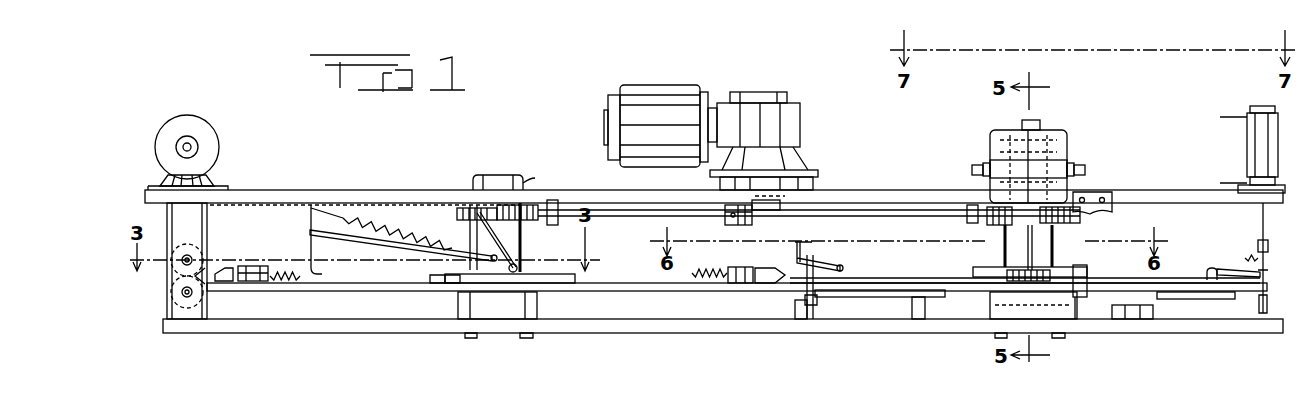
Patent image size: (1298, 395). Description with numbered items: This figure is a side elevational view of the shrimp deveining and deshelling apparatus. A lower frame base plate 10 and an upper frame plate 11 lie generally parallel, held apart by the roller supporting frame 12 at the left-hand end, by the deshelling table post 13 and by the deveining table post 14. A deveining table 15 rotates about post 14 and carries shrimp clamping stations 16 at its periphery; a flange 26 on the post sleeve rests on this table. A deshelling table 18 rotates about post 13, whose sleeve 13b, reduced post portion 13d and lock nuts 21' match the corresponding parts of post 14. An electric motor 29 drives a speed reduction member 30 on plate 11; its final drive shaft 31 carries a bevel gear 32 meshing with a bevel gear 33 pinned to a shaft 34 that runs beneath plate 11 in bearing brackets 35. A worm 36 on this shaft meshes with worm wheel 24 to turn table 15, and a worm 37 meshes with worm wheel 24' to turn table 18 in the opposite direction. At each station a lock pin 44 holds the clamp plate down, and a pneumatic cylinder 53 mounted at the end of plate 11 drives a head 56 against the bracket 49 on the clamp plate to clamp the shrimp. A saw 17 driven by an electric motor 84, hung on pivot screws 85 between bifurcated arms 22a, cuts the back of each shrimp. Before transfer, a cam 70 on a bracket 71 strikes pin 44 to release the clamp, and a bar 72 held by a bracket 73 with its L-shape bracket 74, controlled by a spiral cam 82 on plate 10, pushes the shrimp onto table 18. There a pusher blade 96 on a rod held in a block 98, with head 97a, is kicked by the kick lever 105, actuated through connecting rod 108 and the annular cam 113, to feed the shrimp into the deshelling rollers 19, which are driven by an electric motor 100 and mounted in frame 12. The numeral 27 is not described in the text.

The lower frame base plate 10 is at (750, 332).
The upper frame plate 11 is at (282, 198).
The roller supporting frame 12 is at (207, 230).
The deshelling table post 13 is at (463, 246).
The sleeve 13b is at (524, 246).
The post portion of reduced diameter 13d is at (496, 175).
The deveining table post 14 is at (1066, 240).
The deveining table 15 is at (920, 272).
The shrimp clamping stations 16 is at (828, 266).
The rotatable saw 17 is at (1008, 272).
The deshelling table 18 is at (630, 292).
The deshelling rollers 19 is at (183, 247).
The lock nuts 21' is at (536, 172).
The bifurcated arms 22a is at (985, 164).
The worm wheel 24 is at (1102, 210).
The worm wheel 24' is at (461, 221).
The flange 26 is at (1088, 260).
The support 27 is at (1078, 300).
The electric motor 29 is at (658, 95).
The speed reduction member 30 is at (790, 116).
The final drive shaft 31 is at (797, 167).
The bevel gear 32 is at (775, 211).
The bevel gear 33 is at (745, 226).
The shaft 34 is at (632, 218).
The bearing brackets 35 is at (558, 207).
The worm 36 is at (1003, 228).
The worm 37 is at (525, 204).
The lock pin 44 is at (817, 301).
The bracket 49 is at (1268, 266).
The pneumatic cylinder 53 is at (1247, 150).
The head 56 is at (1258, 244).
The cam 70 is at (812, 302).
The bracket 71 is at (795, 306).
The bar 72 is at (925, 299).
The bracket 73 is at (885, 298).
The L-shape bracket 74 is at (1208, 275).
The spiral cam 82 is at (1153, 311).
The electric motor 84 is at (992, 139).
The pivot screws 85 is at (972, 173).
The pusher blade 96 is at (228, 268).
The head 97a is at (296, 271).
The block 98 is at (253, 266).
The electric motor 100 is at (218, 128).
The kick lever 105 is at (316, 257).
The connecting rod 108 is at (376, 242).
The annular cam 113 is at (430, 278).